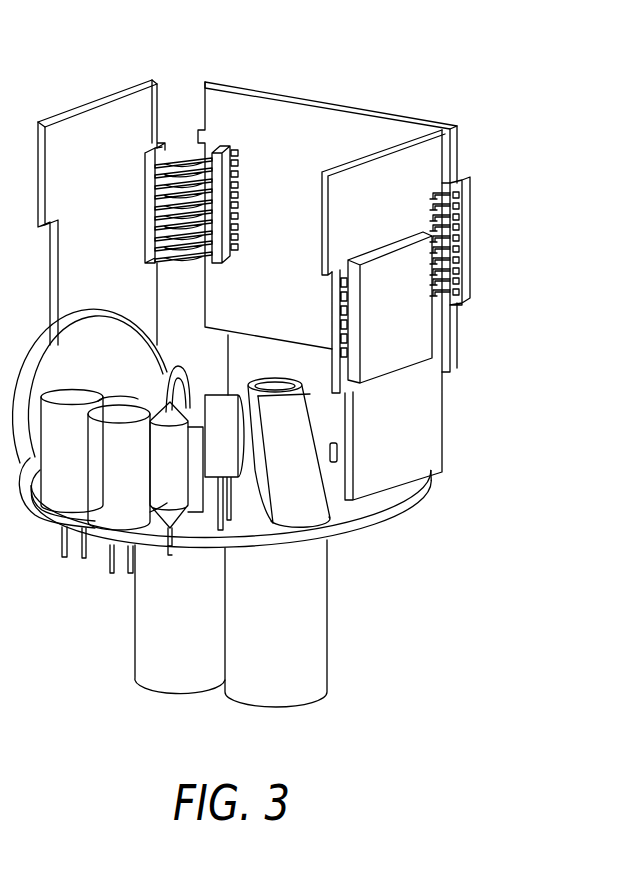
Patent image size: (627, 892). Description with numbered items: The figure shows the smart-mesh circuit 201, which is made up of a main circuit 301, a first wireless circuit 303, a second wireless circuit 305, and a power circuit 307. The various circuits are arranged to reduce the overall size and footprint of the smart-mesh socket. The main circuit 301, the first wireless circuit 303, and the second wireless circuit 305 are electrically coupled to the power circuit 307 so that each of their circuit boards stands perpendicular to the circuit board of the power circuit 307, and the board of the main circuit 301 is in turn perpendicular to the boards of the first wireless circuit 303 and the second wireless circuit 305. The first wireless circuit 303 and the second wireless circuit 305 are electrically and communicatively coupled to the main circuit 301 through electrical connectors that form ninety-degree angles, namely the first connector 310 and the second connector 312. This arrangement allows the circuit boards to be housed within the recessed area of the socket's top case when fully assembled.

The smart-mesh circuit 201 is at (519, 109).
The main circuit 301 is at (245, 107).
The first wireless circuit 303 is at (90, 117).
The second wireless circuit 305 is at (420, 395).
The power circuit 307 is at (93, 543).
The first connector 310 is at (180, 147).
The second connector 312 is at (448, 177).